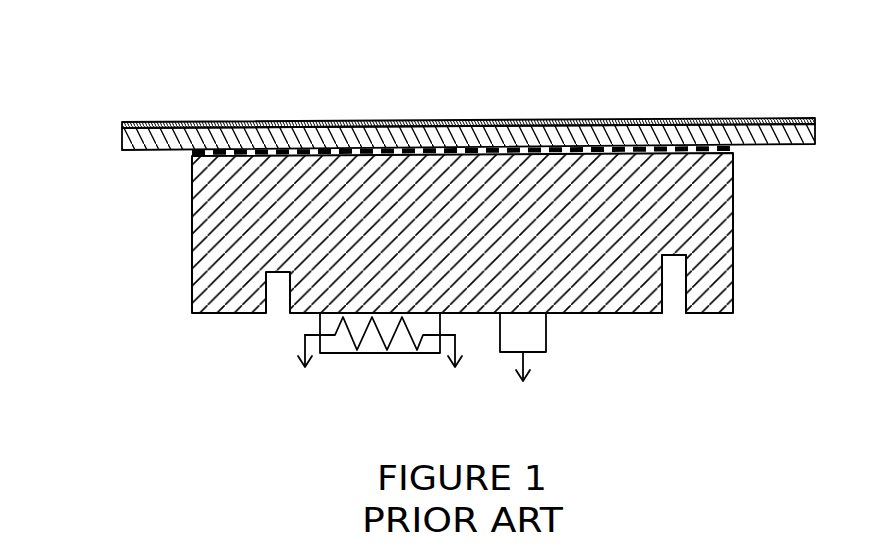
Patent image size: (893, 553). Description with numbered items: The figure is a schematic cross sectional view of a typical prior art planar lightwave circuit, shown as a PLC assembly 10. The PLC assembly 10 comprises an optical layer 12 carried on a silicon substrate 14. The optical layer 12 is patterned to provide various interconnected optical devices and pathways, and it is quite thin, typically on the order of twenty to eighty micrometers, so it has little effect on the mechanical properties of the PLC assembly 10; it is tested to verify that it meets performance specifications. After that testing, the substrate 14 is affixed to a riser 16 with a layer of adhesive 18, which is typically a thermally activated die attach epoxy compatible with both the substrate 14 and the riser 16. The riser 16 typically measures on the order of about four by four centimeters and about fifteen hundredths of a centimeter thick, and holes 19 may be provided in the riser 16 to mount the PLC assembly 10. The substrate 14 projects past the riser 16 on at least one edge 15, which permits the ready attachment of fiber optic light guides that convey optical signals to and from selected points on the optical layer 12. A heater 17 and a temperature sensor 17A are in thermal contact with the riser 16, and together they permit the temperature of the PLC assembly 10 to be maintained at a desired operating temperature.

The PLC assembly 10 is at (200, 55).
The edge 15 is at (145, 88).
The optical layer 12 is at (227, 121).
The silicon substrate 14 is at (178, 138).
The riser 16 is at (223, 248).
The layer of adhesive 18 is at (728, 150).
The holes 19 is at (672, 297).
The heater 17 is at (381, 353).
The temperature sensor 17A is at (537, 352).